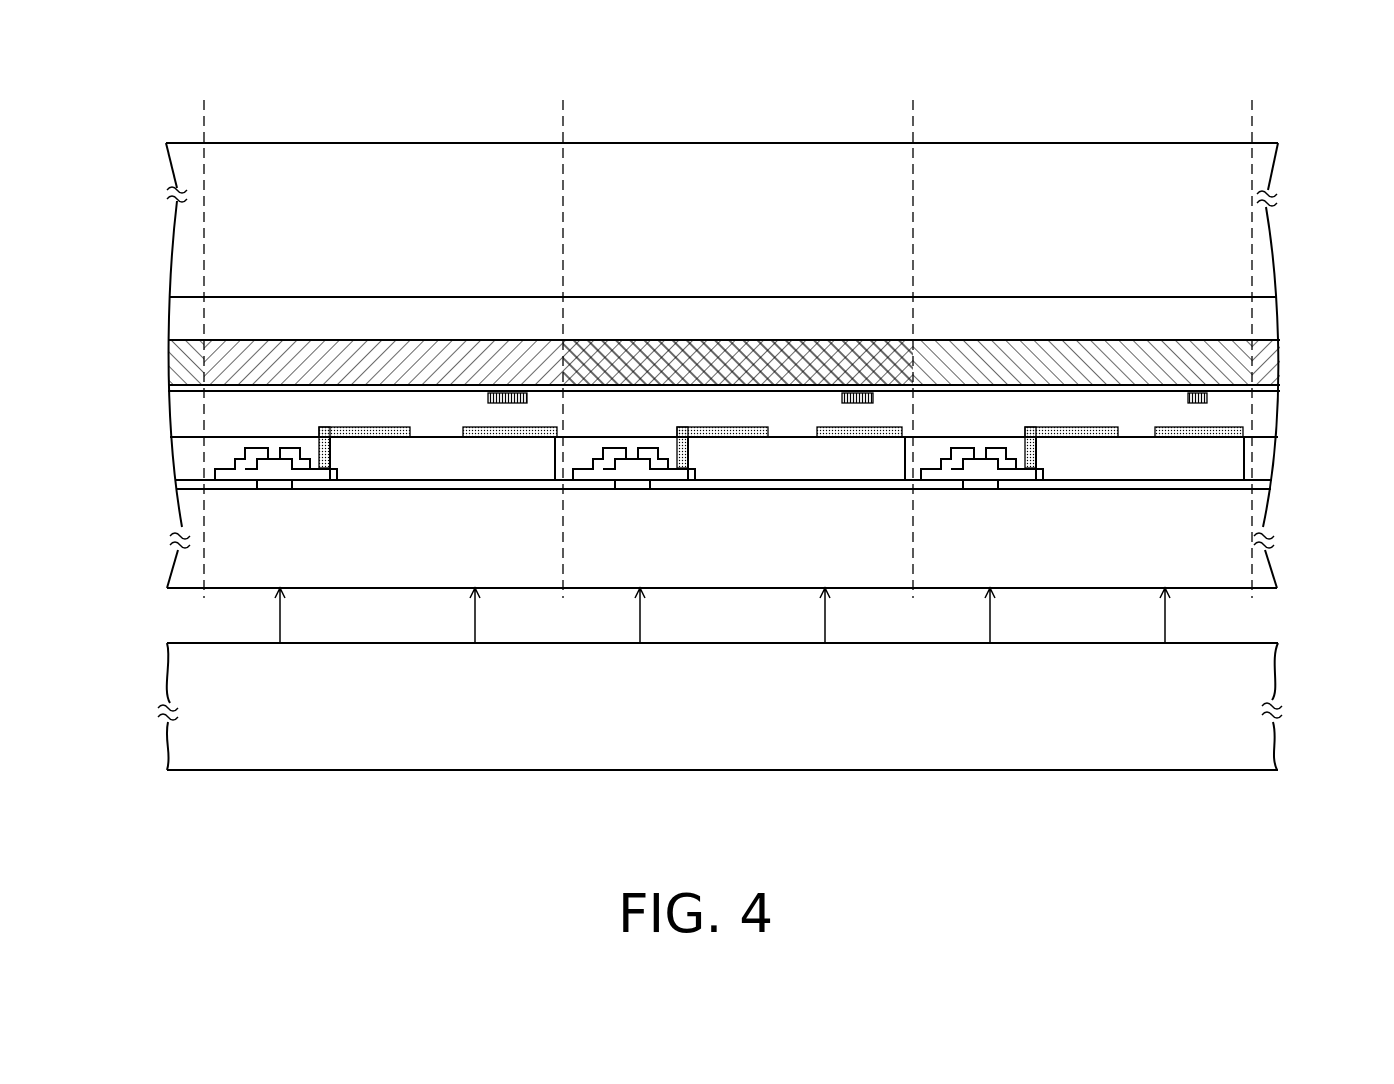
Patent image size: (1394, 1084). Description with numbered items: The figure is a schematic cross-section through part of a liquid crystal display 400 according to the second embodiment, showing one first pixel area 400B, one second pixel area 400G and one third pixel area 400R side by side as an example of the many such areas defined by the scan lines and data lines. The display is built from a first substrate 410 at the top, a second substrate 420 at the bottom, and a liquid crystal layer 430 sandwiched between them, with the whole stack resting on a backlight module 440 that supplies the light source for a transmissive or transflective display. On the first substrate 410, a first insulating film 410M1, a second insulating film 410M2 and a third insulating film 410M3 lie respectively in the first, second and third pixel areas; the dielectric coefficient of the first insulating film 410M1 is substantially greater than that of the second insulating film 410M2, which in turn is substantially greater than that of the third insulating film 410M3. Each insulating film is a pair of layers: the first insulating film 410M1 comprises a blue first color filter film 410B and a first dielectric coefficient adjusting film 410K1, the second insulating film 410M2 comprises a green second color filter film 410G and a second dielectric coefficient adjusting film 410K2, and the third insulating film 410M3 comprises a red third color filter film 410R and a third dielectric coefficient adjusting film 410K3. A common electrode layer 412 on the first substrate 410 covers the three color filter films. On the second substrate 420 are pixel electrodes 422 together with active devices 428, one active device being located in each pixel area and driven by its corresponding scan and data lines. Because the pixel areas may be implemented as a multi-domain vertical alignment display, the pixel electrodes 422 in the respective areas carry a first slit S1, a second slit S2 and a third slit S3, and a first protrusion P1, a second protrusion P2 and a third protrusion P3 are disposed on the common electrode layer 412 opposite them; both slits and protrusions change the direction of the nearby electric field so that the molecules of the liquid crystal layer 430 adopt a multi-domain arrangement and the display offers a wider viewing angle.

The liquid crystal display 400 is at (1345, 865).
The first pixel area 400B is at (563, 117).
The second pixel area 400G is at (913, 117).
The third pixel area 400R is at (1252, 117).
The first substrate 410 is at (1308, 143).
The first insulating film 410M1 is at (457, 223).
The second insulating film 410M2 is at (829, 223).
The third insulating film 410M3 is at (1195, 223).
The first color filter film 410B is at (298, 325).
The second color filter film 410G is at (670, 325).
The third color filter film 410R is at (1036, 325).
The first dielectric coefficient adjusting film 410K1 is at (408, 342).
The second dielectric coefficient adjusting film 410K2 is at (780, 342).
The third dielectric coefficient adjusting film 410K3 is at (1144, 342).
The common electrode layer 412 is at (173, 389).
The second substrate 420 is at (1308, 437).
The pixel electrode 422 is at (320, 427).
The active device 428 is at (250, 508).
The liquid crystal layer 430 is at (1320, 395).
The backlight module 440 is at (1272, 754).
The first slit S1 is at (434, 426).
The second slit S2 is at (802, 426).
The third slit S3 is at (1148, 426).
The first protrusion P1 is at (505, 403).
The second protrusion P2 is at (857, 403).
The third protrusion P3 is at (1198, 403).